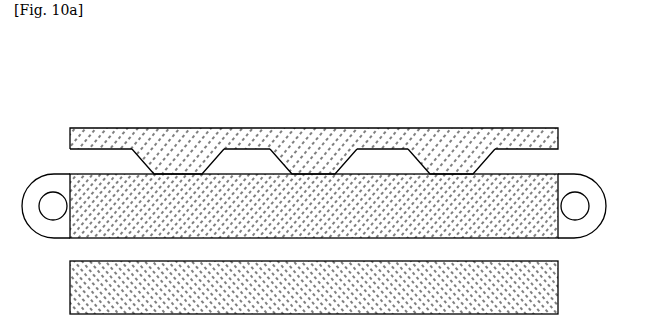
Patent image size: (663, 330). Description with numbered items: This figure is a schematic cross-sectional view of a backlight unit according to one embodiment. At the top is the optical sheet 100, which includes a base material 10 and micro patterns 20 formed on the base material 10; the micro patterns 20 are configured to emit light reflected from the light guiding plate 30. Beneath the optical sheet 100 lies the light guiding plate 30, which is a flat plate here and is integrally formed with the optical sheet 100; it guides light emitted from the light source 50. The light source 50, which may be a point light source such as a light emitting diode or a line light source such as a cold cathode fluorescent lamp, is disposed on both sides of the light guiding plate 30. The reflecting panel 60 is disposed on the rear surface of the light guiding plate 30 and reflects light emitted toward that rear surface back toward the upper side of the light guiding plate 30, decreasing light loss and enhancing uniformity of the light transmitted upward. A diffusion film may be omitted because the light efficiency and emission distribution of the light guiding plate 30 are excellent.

The optical sheet 100 is at (533, 103).
The base material 10 is at (548, 137).
The micro patterns 20 is at (487, 158).
The light guiding plate 30 is at (532, 228).
The light source 50 is at (578, 205).
The reflecting panel 60 is at (543, 288).